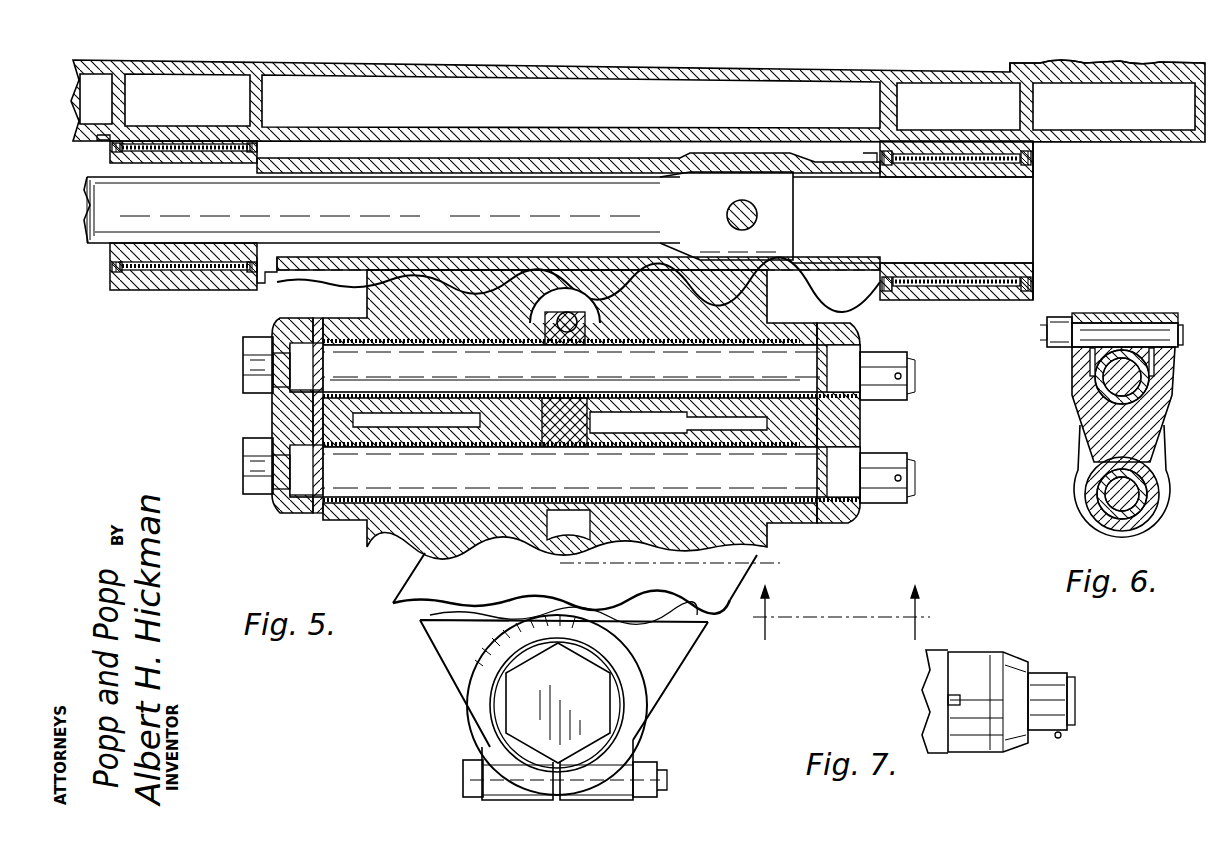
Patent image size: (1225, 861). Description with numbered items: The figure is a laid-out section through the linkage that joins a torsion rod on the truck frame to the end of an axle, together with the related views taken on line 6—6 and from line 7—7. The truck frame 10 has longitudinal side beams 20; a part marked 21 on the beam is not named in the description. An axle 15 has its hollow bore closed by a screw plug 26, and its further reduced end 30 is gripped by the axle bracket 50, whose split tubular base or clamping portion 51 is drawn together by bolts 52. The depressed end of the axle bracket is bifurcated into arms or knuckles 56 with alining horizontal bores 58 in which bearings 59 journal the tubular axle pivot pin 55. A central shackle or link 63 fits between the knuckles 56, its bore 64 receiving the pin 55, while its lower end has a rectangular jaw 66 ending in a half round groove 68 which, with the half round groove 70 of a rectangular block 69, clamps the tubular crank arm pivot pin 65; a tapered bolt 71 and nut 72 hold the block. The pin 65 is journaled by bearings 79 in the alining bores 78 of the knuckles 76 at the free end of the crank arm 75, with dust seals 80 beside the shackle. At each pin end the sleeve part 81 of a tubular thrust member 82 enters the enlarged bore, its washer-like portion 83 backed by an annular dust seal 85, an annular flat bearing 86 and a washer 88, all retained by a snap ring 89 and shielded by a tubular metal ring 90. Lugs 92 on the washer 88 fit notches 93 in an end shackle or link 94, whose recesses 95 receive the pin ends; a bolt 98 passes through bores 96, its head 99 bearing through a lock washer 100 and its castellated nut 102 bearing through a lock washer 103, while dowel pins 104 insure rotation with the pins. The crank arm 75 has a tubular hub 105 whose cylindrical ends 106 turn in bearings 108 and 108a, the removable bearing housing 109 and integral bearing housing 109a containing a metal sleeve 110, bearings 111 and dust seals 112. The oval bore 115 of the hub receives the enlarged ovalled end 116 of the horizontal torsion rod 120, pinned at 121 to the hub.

In FIG. 5, the section line 6— 6 is at (770, 297).
In FIG. 5, the line 7— 7 is at (843, 613).
In FIG. 5, the truck frame 10 is at (748, 70).
In FIG. 5, the axle 15 is at (622, 720).
In FIG. 5, the longitudinal side beam 20 is at (510, 64).
In FIG. 5, the raised portion of beam 21 is at (1010, 66).
In FIG. 5, the screw plug 26 is at (558, 703).
In FIG. 5, the further reduced end 30 is at (500, 712).
In FIG. 5, the axle bracket 50 is at (668, 697).
In FIG. 5, the split tubular base or clamping portion 51 is at (665, 667).
In FIG. 5, the bolt 52 is at (668, 782).
In FIG. 5, the tubular axle pivot pin 55 is at (575, 472).
In FIG. 6, the tubular axle pivot pin 55 is at (1103, 505).
In FIG. 5, the arm or knuckle 56 is at (625, 515).
In FIG. 5, the alining horizontal bore 58 is at (452, 512).
In FIG. 5, the bearing 59 is at (670, 515).
In FIG. 5, the central shackle or link 63 is at (556, 506).
In FIG. 6, the central shackle or link 63 is at (1168, 428).
In FIG. 5, the bore 64 is at (575, 495).
In FIG. 6, the bore 64 is at (1100, 487).
In FIG. 5, the tubular crank arm pivot pin 65 is at (732, 380).
In FIG. 6, the tubular crank arm pivot pin 65 is at (1085, 392).
In FIG. 6, the rectangular jaw 66 is at (1150, 313).
In FIG. 5, the half round groove 68 is at (585, 398).
In FIG. 6, the half round groove 68 is at (1150, 385).
In FIG. 5, the rectangular block 69 is at (575, 368).
In FIG. 6, the rectangular block 69 is at (1120, 313).
In FIG. 5, the half round groove 70 is at (583, 362).
In FIG. 6, the half round groove 70 is at (1155, 368).
In FIG. 5, the bolt 71 is at (565, 333).
In FIG. 6, the bolt 71 is at (1185, 332).
In FIG. 6, the nut 72 is at (1058, 349).
In FIG. 5, the crank arm 75 is at (192, 336).
In FIG. 5, the arm or knuckle 76 is at (400, 398).
In FIG. 5, the alining horizontal bore 78 is at (660, 398).
In FIG. 5, the bearing 79 is at (745, 350).
In FIG. 5, the dust seal 80 is at (520, 420).
In FIG. 5, the sleeve part 81 is at (368, 517).
In FIG. 5, the tubular thrust member 82 is at (392, 520).
In FIG. 5, the washer-like portion 83 is at (342, 518).
In FIG. 5, the annular dust seal 85 is at (805, 524).
In FIG. 5, the annular flat bearing 86 is at (330, 516).
In FIG. 5, the washer 88 is at (300, 515).
In FIG. 7, the washer 88 is at (958, 652).
In FIG. 5, the snap ring 89 is at (242, 472).
In FIG. 5, the tubular metal ring 90 is at (822, 328).
In FIG. 7, the tubular metal ring 90 is at (925, 672).
In FIG. 5, the lug 92 is at (318, 318).
In FIG. 7, the lug 92 is at (948, 700).
In FIG. 5, the notch 93 is at (310, 330).
In FIG. 7, the notch 93 is at (960, 695).
In FIG. 5, the end shackle or link 94 is at (280, 505).
In FIG. 7, the end shackle or link 94 is at (978, 752).
In FIG. 5, the recess 95 is at (928, 340).
In FIG. 5, the bore 96 is at (262, 364).
In FIG. 5, the bolt 98 is at (917, 376).
In FIG. 5, the head 99 is at (245, 355).
In FIG. 5, the lock washer 100 is at (278, 448).
In FIG. 5, the castellated nut 102 is at (908, 398).
In FIG. 5, the lock washer 103 is at (862, 452).
In FIG. 5, the dowel pin 104 is at (290, 425).
In FIG. 5, the tubular hub 105 is at (510, 158).
In FIG. 5, the cylindrical end 106 is at (110, 160).
In FIG. 5, the bearing 108 is at (1050, 158).
In FIG. 5, the bearing 108a is at (130, 298).
In FIG. 5, the cylindrical bearing housing 109 is at (1005, 300).
In FIG. 5, the cylindrical bearing housing 109a is at (190, 290).
In FIG. 5, the metal sleeve 110 is at (1035, 272).
In FIG. 5, the bearing 111 is at (187, 263).
In FIG. 5, the dust seal 112 is at (118, 270).
In FIG. 5, the bore 115 is at (1035, 225).
In FIG. 5, the enlarged ovalled end 116 is at (795, 193).
In FIG. 5, the torsion rod 120 is at (382, 210).
In FIG. 5, the pin 121 is at (726, 214).